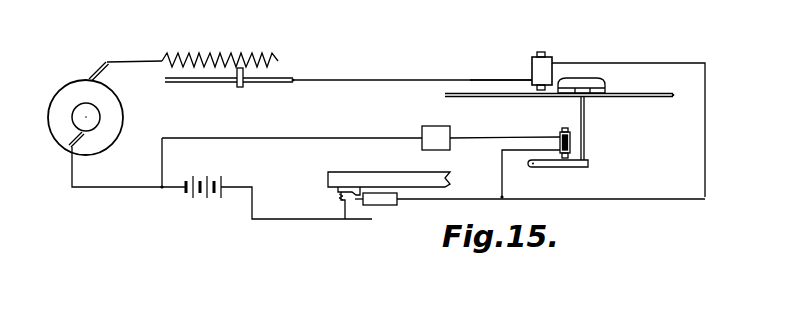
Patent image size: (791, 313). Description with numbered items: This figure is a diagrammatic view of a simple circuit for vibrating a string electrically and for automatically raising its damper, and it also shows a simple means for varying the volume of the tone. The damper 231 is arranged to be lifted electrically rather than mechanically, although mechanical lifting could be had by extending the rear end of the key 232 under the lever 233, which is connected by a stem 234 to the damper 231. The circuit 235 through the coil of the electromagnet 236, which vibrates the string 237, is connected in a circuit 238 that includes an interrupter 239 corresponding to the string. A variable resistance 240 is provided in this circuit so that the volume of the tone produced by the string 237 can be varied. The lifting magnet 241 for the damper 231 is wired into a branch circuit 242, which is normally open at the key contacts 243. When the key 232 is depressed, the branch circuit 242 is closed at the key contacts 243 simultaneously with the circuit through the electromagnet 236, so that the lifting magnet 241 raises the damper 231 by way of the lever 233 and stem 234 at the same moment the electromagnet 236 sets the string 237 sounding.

The damper 231 is at (598, 83).
The key 232 is at (406, 160).
The lever 233 is at (578, 168).
The stem 234 is at (586, 125).
The circuit 235 is at (504, 64).
The electromagnet 236 is at (548, 62).
The string 237 is at (672, 97).
The circuit 238 is at (409, 79).
The interrupter 239 is at (118, 118).
The variable resistance 240 is at (242, 68).
The lifting magnet 241 is at (560, 136).
The branch circuit 242 is at (397, 122).
The key contacts 243 is at (357, 182).